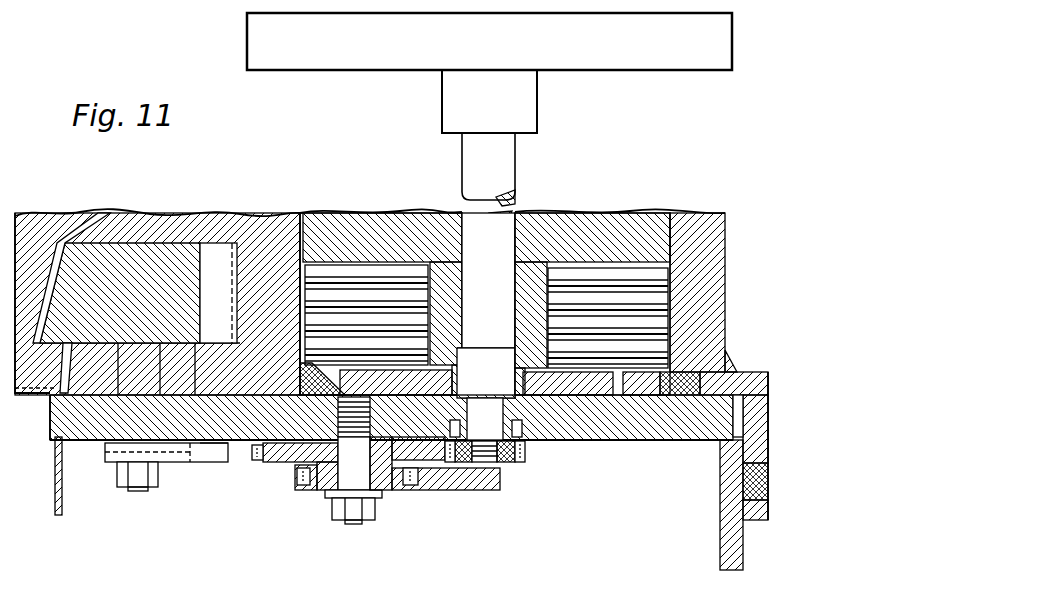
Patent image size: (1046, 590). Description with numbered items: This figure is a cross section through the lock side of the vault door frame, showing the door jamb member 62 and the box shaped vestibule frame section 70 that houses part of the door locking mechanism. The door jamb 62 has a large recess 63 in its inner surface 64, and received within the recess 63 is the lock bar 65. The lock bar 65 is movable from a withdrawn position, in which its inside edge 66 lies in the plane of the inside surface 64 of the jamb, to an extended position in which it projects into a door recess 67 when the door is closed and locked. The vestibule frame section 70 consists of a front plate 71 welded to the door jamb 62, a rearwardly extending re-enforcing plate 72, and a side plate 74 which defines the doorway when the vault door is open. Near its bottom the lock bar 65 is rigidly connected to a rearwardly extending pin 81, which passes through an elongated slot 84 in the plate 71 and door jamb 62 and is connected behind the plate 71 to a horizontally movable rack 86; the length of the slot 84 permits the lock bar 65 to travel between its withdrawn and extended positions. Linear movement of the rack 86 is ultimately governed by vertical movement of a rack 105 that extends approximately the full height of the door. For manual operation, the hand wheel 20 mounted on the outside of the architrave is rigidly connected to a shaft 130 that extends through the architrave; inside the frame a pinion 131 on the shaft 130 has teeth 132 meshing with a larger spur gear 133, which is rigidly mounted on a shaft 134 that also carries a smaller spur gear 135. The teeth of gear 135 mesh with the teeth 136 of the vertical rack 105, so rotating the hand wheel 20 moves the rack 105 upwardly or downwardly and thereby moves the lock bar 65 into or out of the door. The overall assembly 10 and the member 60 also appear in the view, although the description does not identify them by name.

The apparatus 10 is at (22, 208).
The hand wheel 20 is at (489, 73).
The right body member 60 is at (597, 216).
The door jamb member 62 is at (277, 228).
The recess 63 is at (221, 258).
The inner surface 64 is at (133, 211).
The lock bar 65 is at (178, 297).
The inside edge 66 is at (90, 228).
The door recess 67 is at (57, 255).
The vestibule frame section 70 is at (546, 518).
The front plate 71 is at (628, 442).
The re-enforcing plate 72 is at (722, 549).
The side plate 74 is at (64, 490).
The pin 81 is at (100, 437).
The elongated slot 84 is at (182, 463).
The rack 86 is at (227, 459).
The vertical rack 105 is at (474, 491).
The shaft 130 is at (505, 176).
The pinion 131 is at (512, 465).
The teeth 132 is at (527, 456).
The spur gear 133 is at (269, 462).
The shaft 134 is at (362, 472).
The spur gear 135 is at (316, 488).
The teeth 136 is at (423, 491).